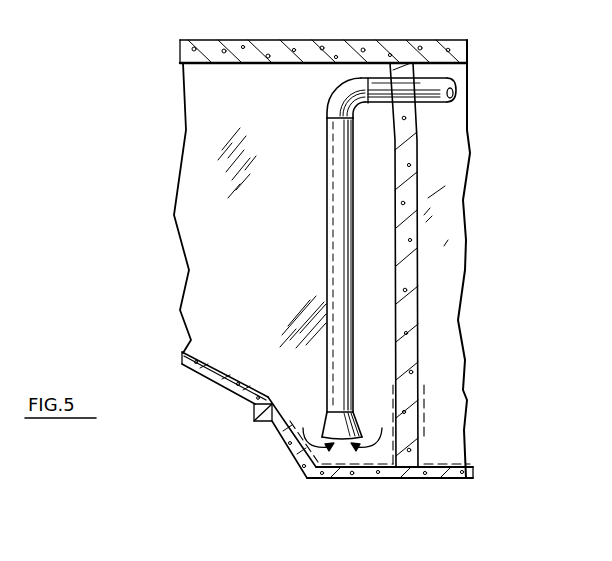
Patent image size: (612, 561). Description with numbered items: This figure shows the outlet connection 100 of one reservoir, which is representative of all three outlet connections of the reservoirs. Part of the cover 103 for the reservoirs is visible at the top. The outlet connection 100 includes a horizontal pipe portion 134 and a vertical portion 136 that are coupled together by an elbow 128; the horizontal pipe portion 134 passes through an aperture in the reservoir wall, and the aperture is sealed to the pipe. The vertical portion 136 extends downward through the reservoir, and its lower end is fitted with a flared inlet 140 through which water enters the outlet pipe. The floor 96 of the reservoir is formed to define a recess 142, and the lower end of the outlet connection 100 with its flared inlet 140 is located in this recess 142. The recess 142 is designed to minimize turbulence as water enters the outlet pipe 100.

The floor 96 is at (219, 391).
The outlet connection 100 is at (312, 105).
The cover 103 is at (474, 30).
The pipe elbow 128 is at (340, 91).
The horizontal pipe portion 134 is at (433, 103).
The vertical portion 136 is at (329, 226).
The flared inlet 140 is at (322, 420).
The recess 142 is at (284, 460).